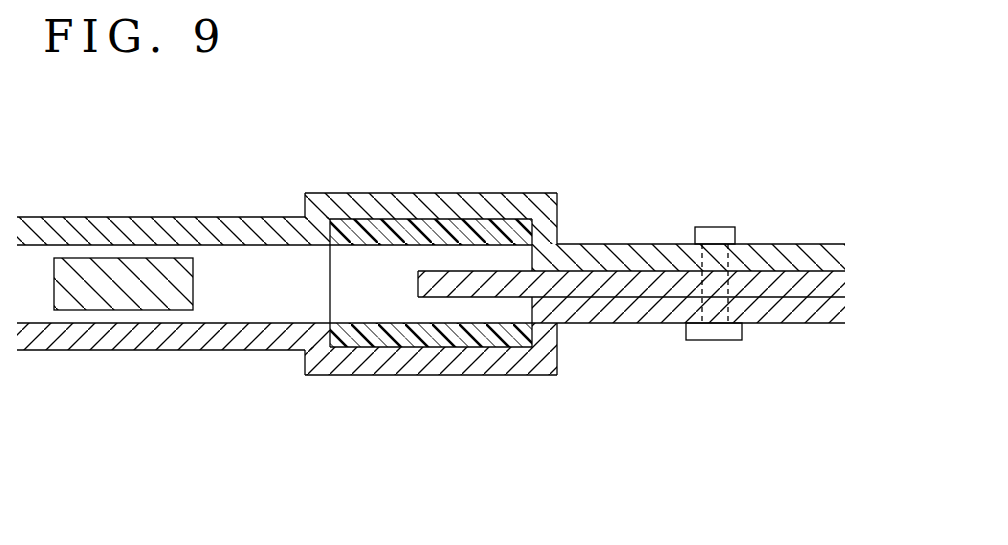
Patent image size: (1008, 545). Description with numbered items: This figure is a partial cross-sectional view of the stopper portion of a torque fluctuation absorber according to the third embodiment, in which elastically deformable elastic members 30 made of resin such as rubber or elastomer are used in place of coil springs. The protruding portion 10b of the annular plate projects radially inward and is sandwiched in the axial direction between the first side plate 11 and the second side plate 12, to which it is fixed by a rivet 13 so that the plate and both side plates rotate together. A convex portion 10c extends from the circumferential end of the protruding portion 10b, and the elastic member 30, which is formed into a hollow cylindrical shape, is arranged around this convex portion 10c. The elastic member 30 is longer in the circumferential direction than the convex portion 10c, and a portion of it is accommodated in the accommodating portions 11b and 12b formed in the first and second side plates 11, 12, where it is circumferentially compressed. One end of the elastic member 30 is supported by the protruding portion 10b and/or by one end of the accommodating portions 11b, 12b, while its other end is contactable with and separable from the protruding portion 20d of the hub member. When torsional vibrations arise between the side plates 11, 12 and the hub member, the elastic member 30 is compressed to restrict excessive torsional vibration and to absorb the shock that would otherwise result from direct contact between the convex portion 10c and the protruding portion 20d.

The second side plate 12 is at (159, 229).
The accommodating portion 12b is at (392, 202).
The convex portion 10c is at (498, 280).
The protruding portion 10b is at (642, 285).
The rivet 13 is at (712, 236).
The protruding portion 20d is at (123, 302).
The first side plate 11 is at (200, 337).
The accommodating portion 11b is at (485, 360).
The elastic member 30 is at (392, 333).